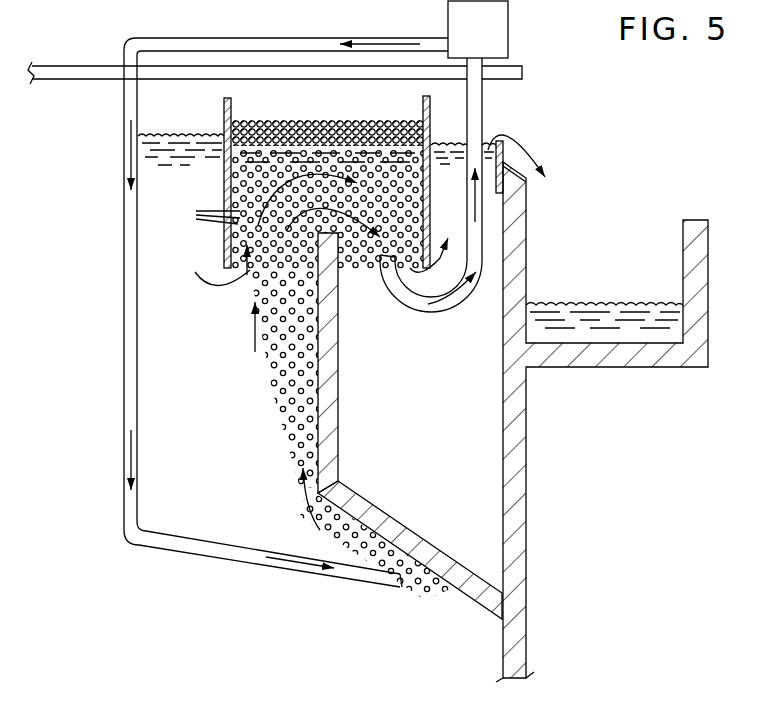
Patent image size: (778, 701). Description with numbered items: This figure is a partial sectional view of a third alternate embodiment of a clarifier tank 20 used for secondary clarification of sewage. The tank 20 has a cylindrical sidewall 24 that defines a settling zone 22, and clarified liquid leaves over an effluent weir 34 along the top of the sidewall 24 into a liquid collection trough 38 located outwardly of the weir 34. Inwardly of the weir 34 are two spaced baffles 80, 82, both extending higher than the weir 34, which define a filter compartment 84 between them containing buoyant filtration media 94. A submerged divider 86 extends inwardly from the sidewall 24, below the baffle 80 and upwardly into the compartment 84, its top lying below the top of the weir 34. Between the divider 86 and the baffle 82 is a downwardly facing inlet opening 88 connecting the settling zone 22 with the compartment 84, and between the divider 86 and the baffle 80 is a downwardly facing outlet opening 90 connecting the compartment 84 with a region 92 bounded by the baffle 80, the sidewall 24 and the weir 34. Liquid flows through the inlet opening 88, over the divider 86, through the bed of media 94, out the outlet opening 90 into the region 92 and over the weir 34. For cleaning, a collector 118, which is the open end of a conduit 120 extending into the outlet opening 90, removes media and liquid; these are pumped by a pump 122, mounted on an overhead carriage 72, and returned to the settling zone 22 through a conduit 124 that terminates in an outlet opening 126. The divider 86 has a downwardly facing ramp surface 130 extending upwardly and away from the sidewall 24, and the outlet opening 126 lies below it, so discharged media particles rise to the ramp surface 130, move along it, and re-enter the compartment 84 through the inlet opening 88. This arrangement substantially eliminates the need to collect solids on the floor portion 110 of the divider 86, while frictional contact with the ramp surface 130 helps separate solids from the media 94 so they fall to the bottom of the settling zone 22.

The clarifier tank 20 is at (541, 132).
The settling zone 22 is at (450, 630).
The sidewall 24 is at (526, 470).
The effluent weir 34 is at (545, 181).
The liquid collection trough 38 is at (628, 298).
The overhead carriage 72 is at (522, 72).
The baffle 80 is at (423, 104).
The baffle 82 is at (224, 106).
The filter compartment 84 is at (262, 157).
The submerged divider 86 is at (338, 366).
The inlet opening 88 is at (265, 258).
The outlet opening 90 is at (358, 258).
The region 92 is at (490, 242).
The buoyant filtration media 94 is at (201, 216).
The floor portion 110 is at (393, 515).
The collector 118 is at (381, 300).
The conduit 120 is at (482, 92).
The pump 122 is at (496, 41).
The conduit 124 is at (124, 268).
The outlet opening 126 is at (400, 590).
The ramp surface 130 is at (330, 535).